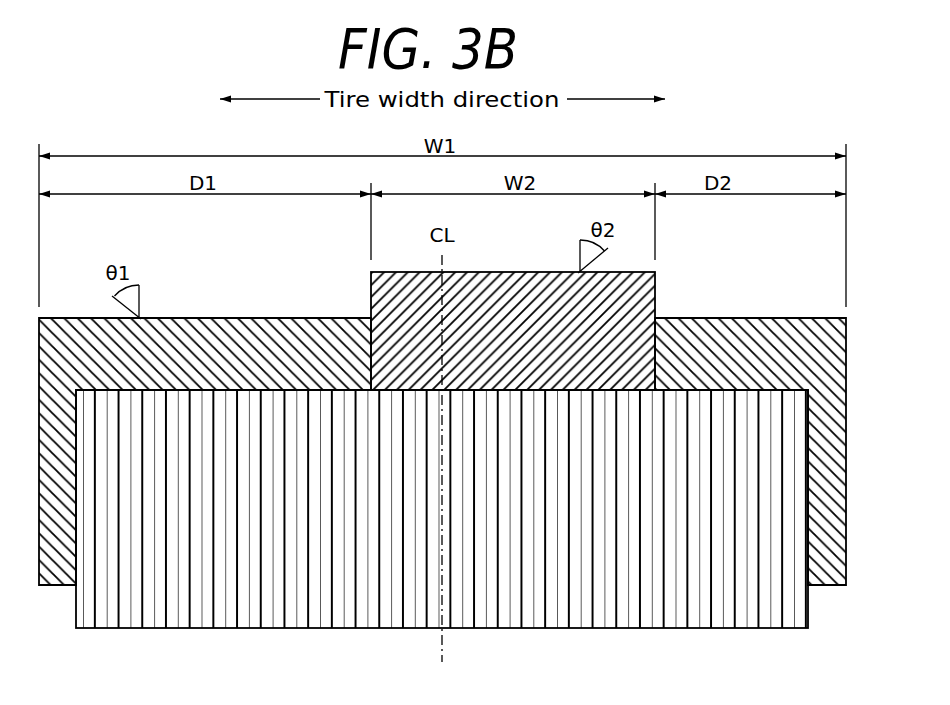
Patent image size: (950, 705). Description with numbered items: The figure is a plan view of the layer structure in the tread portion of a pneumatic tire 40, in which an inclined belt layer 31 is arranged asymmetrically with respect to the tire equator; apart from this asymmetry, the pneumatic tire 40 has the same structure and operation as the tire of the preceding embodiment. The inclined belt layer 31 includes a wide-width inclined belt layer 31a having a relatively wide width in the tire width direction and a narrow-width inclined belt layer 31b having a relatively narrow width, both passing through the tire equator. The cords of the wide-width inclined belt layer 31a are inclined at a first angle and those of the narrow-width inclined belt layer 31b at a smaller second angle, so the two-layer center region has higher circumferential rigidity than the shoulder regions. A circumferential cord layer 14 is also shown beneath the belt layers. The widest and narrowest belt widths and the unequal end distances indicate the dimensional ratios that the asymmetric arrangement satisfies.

The pneumatic tire 40 is at (725, 112).
The inclined belt layer 31 is at (778, 247).
The wide-width inclined belt layer 31a is at (757, 338).
The narrow-width inclined belt layer 31b is at (655, 302).
The circumferential cord layer 14 is at (588, 602).